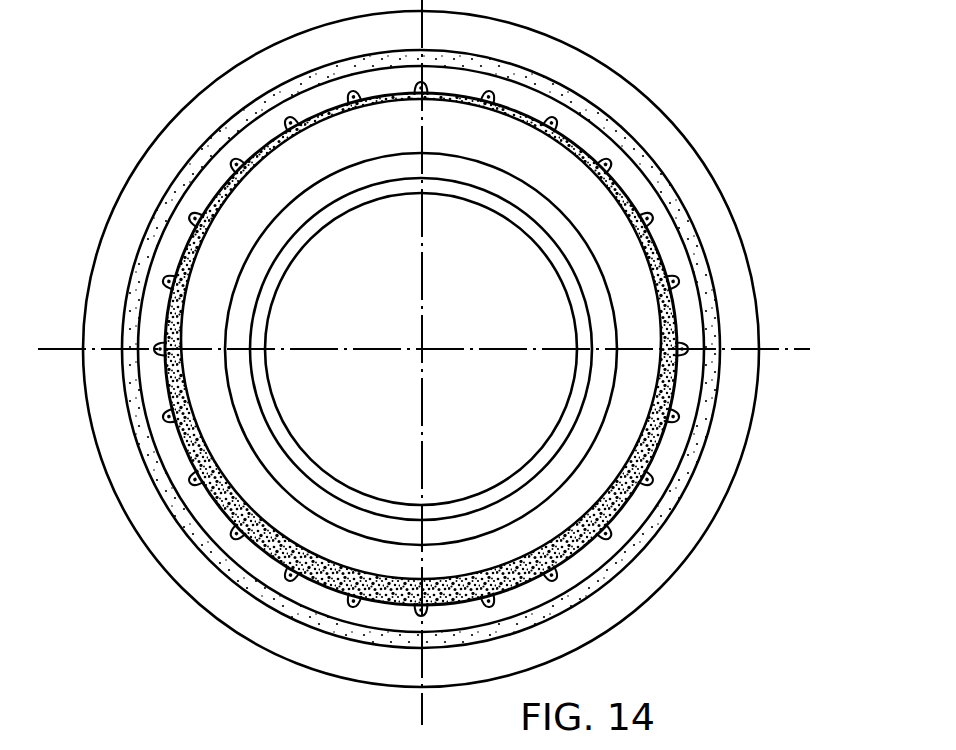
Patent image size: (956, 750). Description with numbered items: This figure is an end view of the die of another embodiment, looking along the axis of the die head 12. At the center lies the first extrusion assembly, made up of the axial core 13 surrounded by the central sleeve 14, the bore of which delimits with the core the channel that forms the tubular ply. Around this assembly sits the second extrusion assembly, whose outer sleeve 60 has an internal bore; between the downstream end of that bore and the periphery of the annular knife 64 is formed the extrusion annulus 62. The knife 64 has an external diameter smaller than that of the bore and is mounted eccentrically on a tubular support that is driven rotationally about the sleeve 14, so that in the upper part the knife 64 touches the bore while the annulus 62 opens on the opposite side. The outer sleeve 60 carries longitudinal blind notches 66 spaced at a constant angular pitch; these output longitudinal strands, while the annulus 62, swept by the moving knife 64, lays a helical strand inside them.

The die head 12 is at (740, 281).
The axial core 13 is at (487, 450).
The central sleeve 14 is at (468, 167).
The outer sleeve 60 is at (655, 190).
The extrusion annulus 62 is at (655, 503).
The annular knife 64 is at (502, 138).
The longitudinal blind notches 66 is at (614, 158).